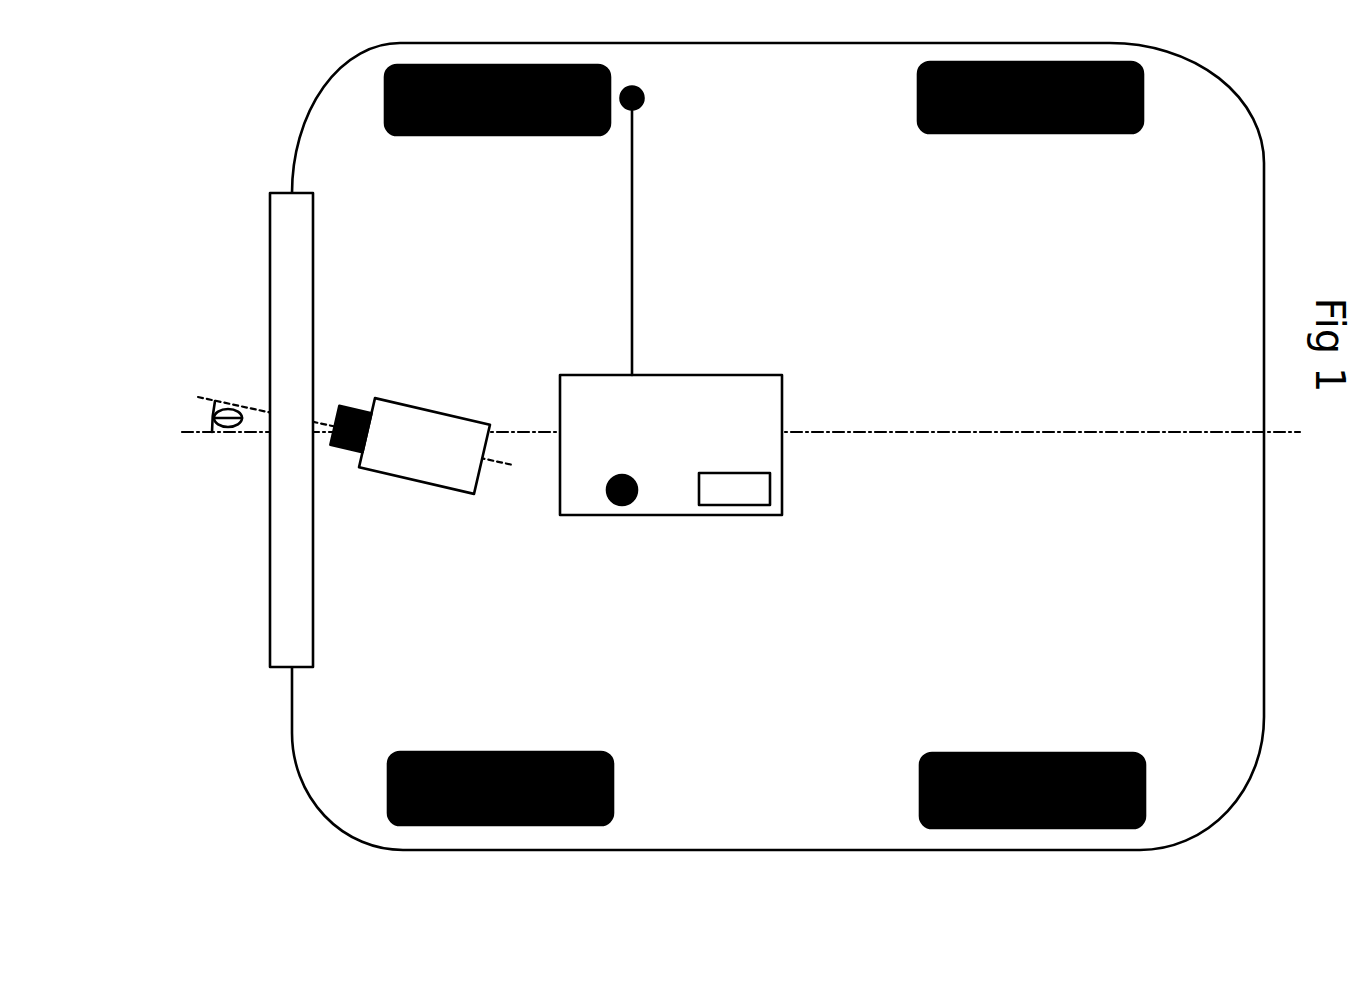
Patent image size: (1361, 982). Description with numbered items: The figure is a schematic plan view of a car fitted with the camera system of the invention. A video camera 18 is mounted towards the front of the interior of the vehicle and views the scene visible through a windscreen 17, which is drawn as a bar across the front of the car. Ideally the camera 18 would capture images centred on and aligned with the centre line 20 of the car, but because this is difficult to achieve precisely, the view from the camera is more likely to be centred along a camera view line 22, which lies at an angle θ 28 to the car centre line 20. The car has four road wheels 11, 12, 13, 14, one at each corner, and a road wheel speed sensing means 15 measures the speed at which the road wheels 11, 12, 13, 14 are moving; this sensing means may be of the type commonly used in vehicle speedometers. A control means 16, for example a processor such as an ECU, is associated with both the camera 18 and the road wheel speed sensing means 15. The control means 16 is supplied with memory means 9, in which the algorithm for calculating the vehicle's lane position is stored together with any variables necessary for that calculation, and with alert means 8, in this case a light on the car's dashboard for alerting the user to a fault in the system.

The alert means 8 is at (622, 505).
The memory means 9 is at (727, 505).
The road wheel 11 is at (920, 792).
The road wheel 12 is at (918, 98).
The road wheel 13 is at (613, 790).
The road wheel 14 is at (483, 135).
The road wheel speed sensing means 15 is at (644, 98).
The control means 16 is at (782, 468).
The windscreen 17 is at (314, 611).
The video camera 18 is at (410, 478).
The centre line 20 is at (528, 432).
The camera view line 22 is at (239, 413).
The angle θ 28 is at (210, 427).